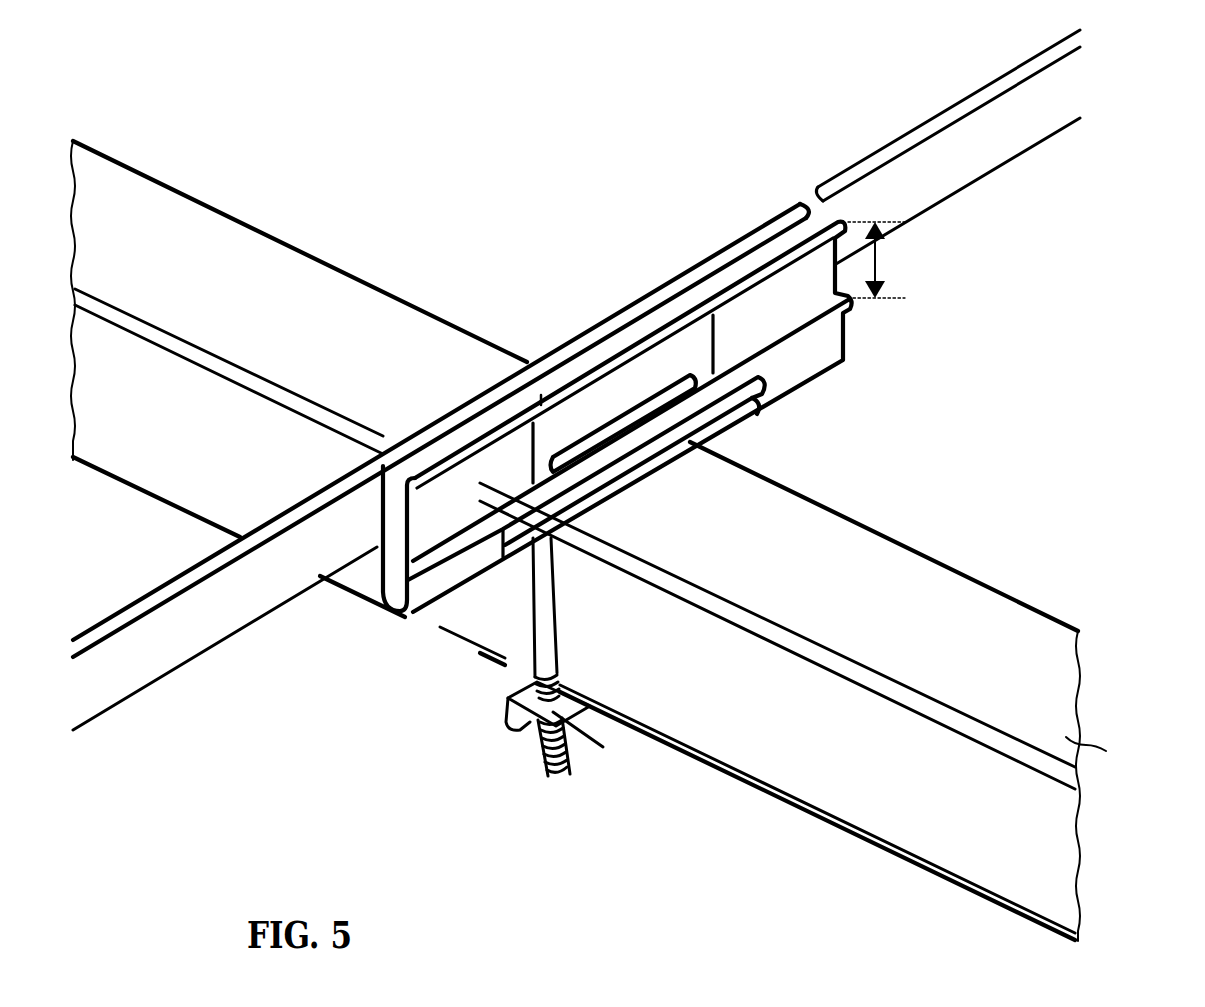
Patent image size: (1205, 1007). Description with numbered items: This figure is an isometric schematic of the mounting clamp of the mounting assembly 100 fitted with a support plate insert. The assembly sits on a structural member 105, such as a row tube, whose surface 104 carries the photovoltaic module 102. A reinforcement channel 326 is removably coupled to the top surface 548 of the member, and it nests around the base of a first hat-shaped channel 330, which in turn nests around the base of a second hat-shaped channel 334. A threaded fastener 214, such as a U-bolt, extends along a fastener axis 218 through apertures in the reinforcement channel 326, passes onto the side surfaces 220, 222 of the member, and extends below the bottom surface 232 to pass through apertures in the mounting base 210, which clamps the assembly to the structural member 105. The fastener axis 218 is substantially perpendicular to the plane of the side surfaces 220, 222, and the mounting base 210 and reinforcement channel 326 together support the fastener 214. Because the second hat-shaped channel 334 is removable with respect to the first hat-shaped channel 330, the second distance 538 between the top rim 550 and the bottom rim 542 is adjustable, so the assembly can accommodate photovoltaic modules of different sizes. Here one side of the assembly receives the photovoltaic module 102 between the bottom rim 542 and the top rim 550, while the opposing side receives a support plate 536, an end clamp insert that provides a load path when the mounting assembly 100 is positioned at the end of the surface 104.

The mounting assembly 100 is at (576, 380).
The photovoltaic module 102 is at (283, 556).
The surface 104 is at (760, 673).
The structural member 105 is at (1115, 760).
The mounting base 210 is at (507, 710).
The fastener 214 is at (527, 612).
The fastener axis 218 is at (541, 393).
The side surface 220 is at (790, 705).
The side surface 222 is at (883, 528).
The bottom surface 232 is at (655, 740).
The reinforcement channel 326 is at (730, 430).
The first hat-shaped channel 330 is at (624, 422).
The second hat-shaped channel 334 is at (418, 524).
The support plate 536 is at (690, 360).
The second distance 538 is at (882, 262).
The bottom rim 542 is at (470, 527).
The top surface 548 is at (905, 582).
The top rim 550 is at (822, 220).